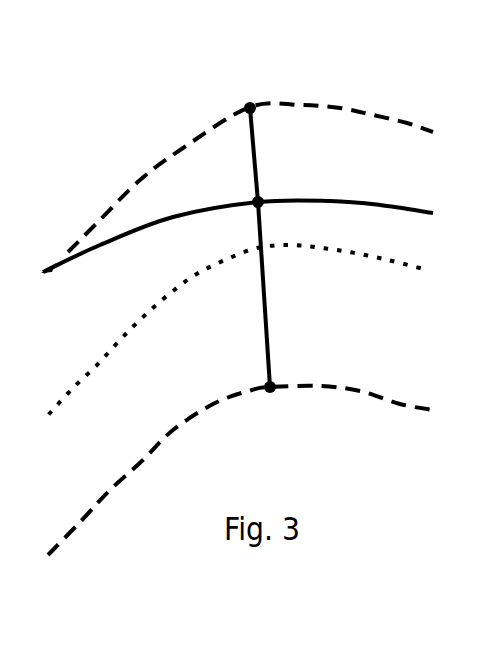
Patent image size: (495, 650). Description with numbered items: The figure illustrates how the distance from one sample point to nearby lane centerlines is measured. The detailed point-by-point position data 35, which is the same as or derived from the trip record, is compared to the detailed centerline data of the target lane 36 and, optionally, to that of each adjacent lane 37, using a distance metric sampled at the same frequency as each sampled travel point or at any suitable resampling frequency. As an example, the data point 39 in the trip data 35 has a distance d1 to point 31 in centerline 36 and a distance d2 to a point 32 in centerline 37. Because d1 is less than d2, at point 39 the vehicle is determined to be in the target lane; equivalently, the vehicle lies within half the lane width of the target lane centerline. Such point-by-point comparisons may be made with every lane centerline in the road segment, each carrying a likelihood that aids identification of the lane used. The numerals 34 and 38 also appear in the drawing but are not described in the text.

The point in centerline 36 31 is at (256, 104).
The point in centerline 37 32 is at (277, 383).
The data point 39 is at (264, 198).
The point-by-point position data 35 is at (262, 230).
The centerline of target lane 36 is at (275, 177).
The centerline of adjacent lane 37 is at (265, 470).
The reference path 34 is at (266, 329).
The region 38 is at (124, 283).